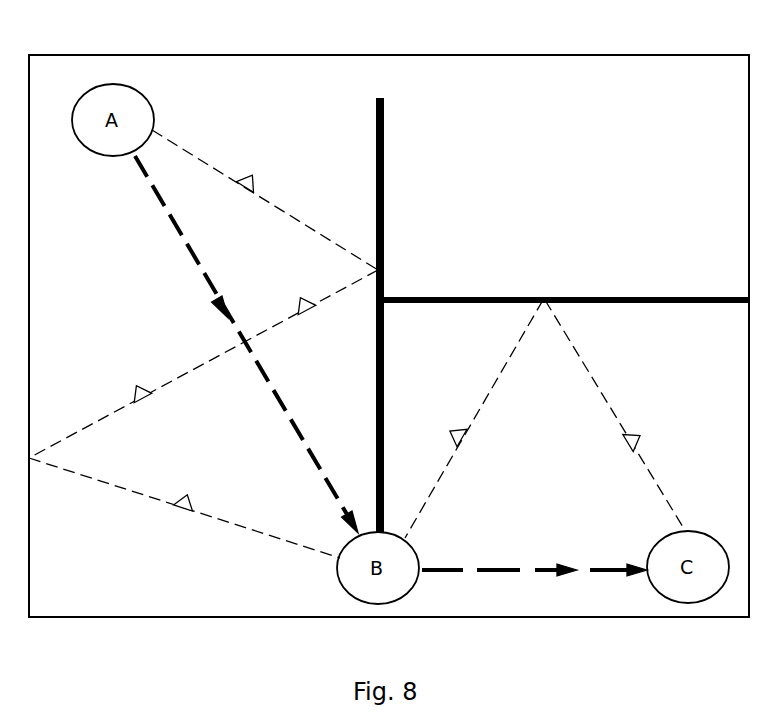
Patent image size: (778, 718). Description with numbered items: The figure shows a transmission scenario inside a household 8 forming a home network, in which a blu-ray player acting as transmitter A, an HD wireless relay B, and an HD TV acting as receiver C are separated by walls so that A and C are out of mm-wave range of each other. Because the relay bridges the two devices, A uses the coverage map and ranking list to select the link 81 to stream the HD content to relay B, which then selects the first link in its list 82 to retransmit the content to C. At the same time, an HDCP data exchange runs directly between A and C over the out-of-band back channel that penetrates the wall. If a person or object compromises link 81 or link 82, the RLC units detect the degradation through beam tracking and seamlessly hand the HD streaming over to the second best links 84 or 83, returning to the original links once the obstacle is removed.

The household 8 is at (360, 55).
The link 81 is at (175, 215).
The first link in the list 82 is at (482, 570).
The second best link 83 is at (480, 412).
The second best link 84 is at (265, 200).